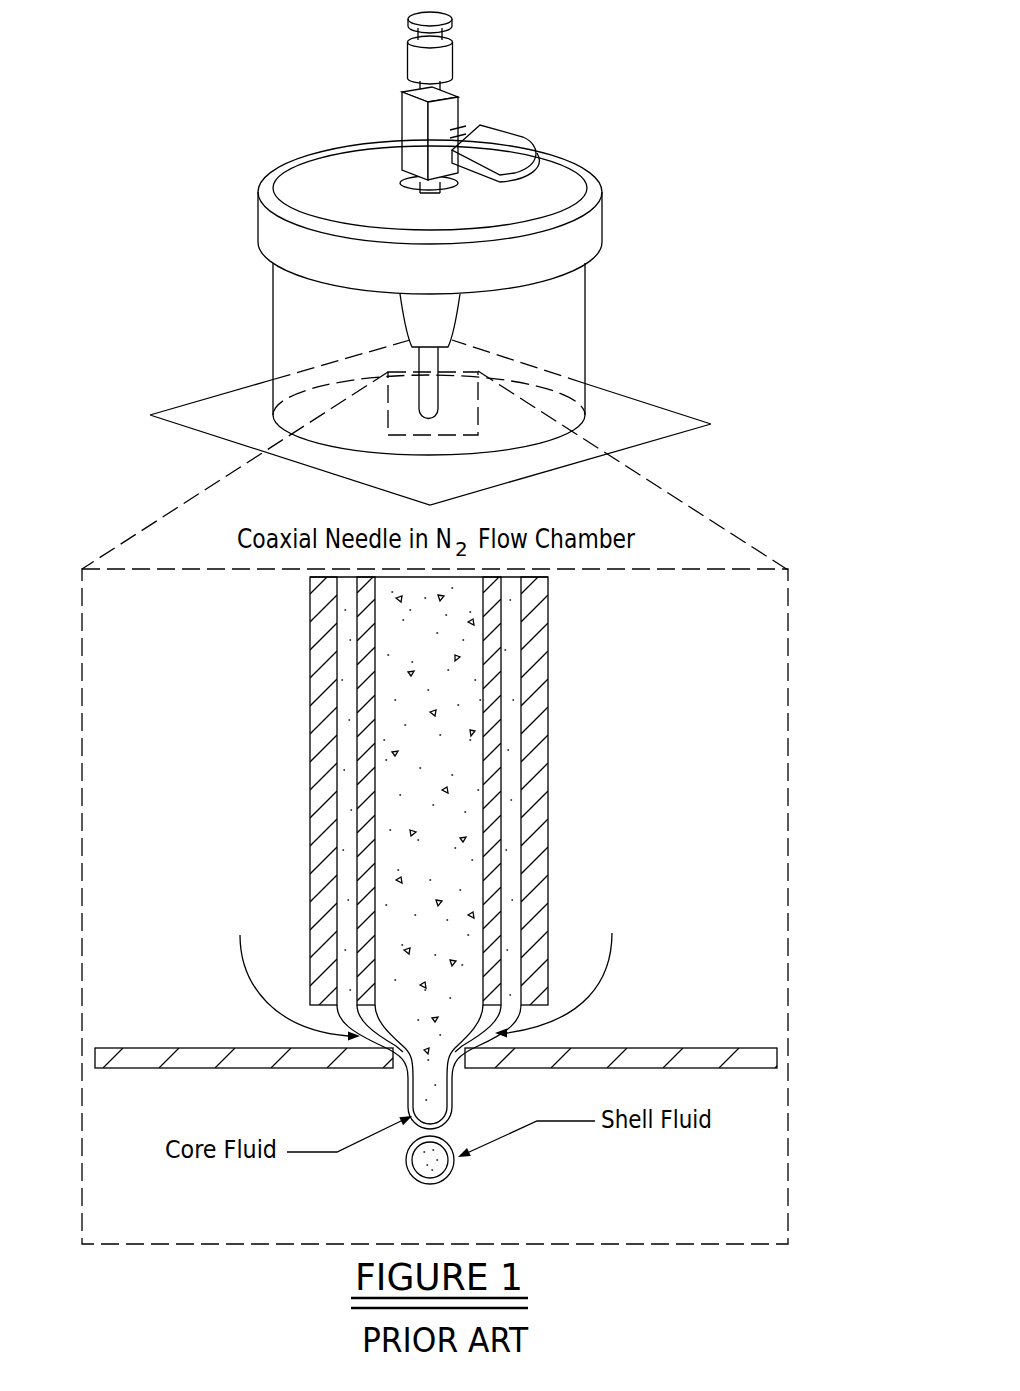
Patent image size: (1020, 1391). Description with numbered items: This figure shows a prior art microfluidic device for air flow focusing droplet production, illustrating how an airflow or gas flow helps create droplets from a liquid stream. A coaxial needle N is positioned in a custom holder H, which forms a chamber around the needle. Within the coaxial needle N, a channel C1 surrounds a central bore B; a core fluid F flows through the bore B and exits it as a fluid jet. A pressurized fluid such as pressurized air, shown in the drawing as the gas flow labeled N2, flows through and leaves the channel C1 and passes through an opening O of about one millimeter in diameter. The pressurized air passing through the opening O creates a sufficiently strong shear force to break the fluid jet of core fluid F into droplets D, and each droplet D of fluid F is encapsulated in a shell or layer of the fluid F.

The custom holder H is at (271, 327).
The coaxial needle N is at (462, 326).
The bore B is at (483, 840).
The core fluid F is at (346, 808).
The channel C1 is at (346, 877).
The opening O is at (396, 1060).
The nitrogen gas flow N2 is at (430, 969).
The droplets D is at (438, 1172).